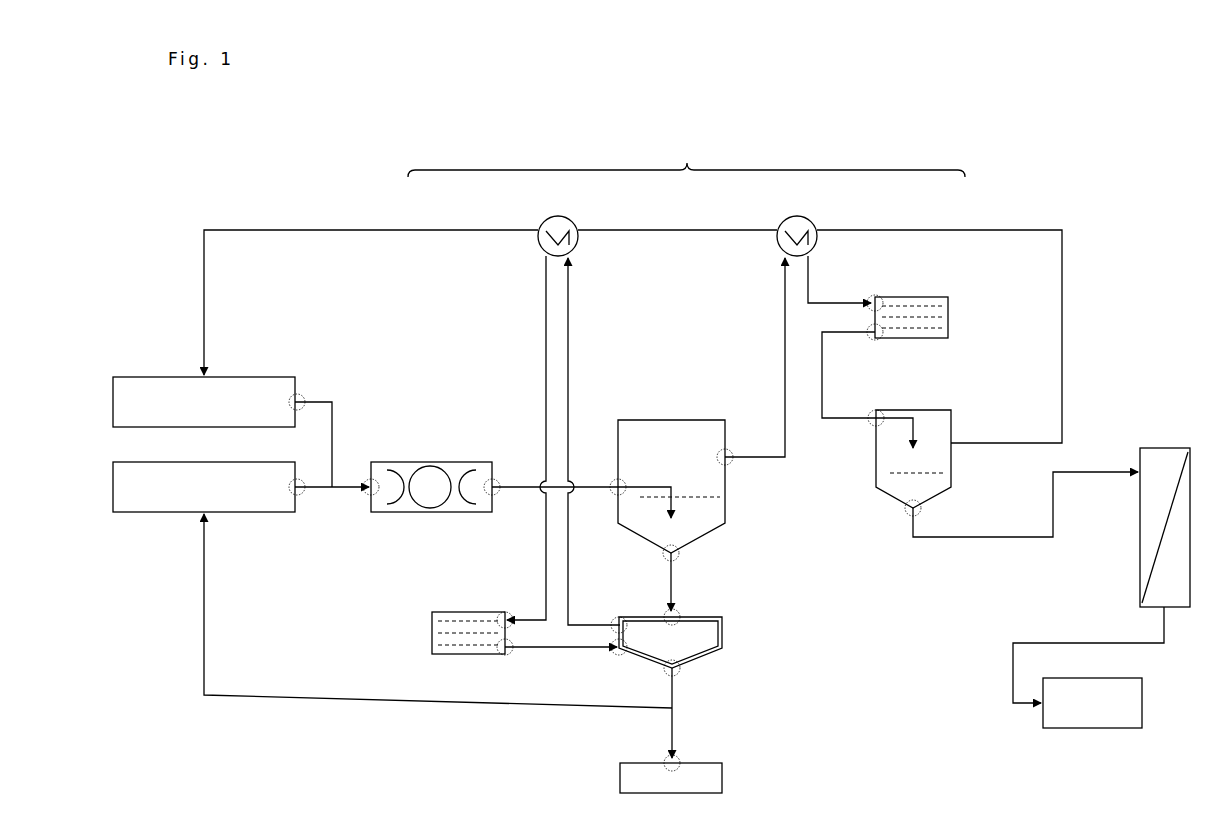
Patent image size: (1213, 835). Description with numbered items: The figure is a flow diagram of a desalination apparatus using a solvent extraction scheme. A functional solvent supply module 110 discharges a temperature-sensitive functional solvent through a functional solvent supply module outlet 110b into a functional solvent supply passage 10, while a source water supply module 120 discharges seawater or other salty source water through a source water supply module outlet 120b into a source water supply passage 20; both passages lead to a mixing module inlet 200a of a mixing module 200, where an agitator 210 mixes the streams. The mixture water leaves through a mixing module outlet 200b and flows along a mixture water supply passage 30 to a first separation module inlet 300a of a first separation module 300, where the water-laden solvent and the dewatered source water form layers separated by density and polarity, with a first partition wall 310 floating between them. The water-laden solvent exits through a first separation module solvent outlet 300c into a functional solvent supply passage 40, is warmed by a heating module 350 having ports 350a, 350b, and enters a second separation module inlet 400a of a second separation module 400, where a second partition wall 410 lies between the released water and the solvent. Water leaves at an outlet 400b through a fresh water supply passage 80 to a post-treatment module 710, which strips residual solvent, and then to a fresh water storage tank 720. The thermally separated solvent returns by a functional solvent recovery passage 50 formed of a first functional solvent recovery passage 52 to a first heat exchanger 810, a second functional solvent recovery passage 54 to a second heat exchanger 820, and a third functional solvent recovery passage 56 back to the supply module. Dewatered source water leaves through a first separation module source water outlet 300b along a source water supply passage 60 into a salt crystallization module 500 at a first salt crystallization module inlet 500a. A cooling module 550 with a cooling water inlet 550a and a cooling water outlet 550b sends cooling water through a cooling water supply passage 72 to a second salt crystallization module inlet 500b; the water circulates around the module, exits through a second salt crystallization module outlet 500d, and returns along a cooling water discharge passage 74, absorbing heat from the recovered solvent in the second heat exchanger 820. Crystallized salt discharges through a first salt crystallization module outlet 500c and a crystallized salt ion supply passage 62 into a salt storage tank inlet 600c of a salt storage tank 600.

The functional solvent supply passage 10 is at (304, 400).
The source water supply passage 20 is at (320, 490).
The mixture water supply passage 30 is at (520, 490).
The functional solvent supply passage 40 is at (783, 347).
The functional solvent recovery passage 50 is at (687, 163).
The first functional solvent recovery passage 52 is at (932, 230).
The second functional solvent recovery passage 54 is at (672, 230).
The third functional solvent recovery passage 56 is at (405, 230).
The source water supply passage 60 is at (673, 576).
The crystallized salt ion supply passage 62 is at (670, 728).
The cooling water supply passage 72 is at (555, 649).
The cooling water discharge passage 74 is at (570, 563).
The fresh water supply passage 80 is at (985, 539).
The functional solvent supply module 110 is at (258, 377).
The functional solvent supply module outlet 110b is at (272, 404).
The source water supply module 120 is at (268, 512).
The source water supply module outlet 120b is at (272, 489).
The mixing module 200 is at (408, 514).
The mixing module inlet 200a is at (365, 478).
The mixing module outlet 200b is at (492, 478).
The agitator 210 is at (430, 466).
The first separation module 300 is at (640, 420).
The first separation module inlet 300a is at (641, 493).
The first separation module source water outlet 300b is at (696, 556).
The first separation module solvent outlet 300c is at (742, 446).
The first partition wall 310 is at (722, 497).
The heating module 350 is at (832, 303).
The cooler inlet 350a is at (884, 292).
The cooler outlet 350b is at (867, 386).
The second separation module 400 is at (930, 410).
The second separation module inlet 400a is at (856, 428).
The second separator outlet 400b is at (937, 513).
The second partition wall 410 is at (946, 473).
The salt crystallization module 500 is at (670, 642).
The first salt crystallization module inlet 500a is at (696, 609).
The second salt crystallization module inlet 500b is at (616, 659).
The first salt crystallization module outlet 500c is at (696, 671).
The second salt crystallization module outlet 500d is at (616, 613).
The cooling module 550 is at (430, 632).
The coolant heat exchanger inlet 550a is at (503, 609).
The coolant heat exchanger outlet 550b is at (502, 657).
The salt storage tank 600 is at (618, 774).
The salt storage tank inlet 600c is at (696, 755).
The post-treatment module 710 is at (1162, 448).
The fresh water storage tank 720 is at (1143, 700).
The first heat exchanger 810 is at (777, 244).
The second heat exchanger 820 is at (538, 244).